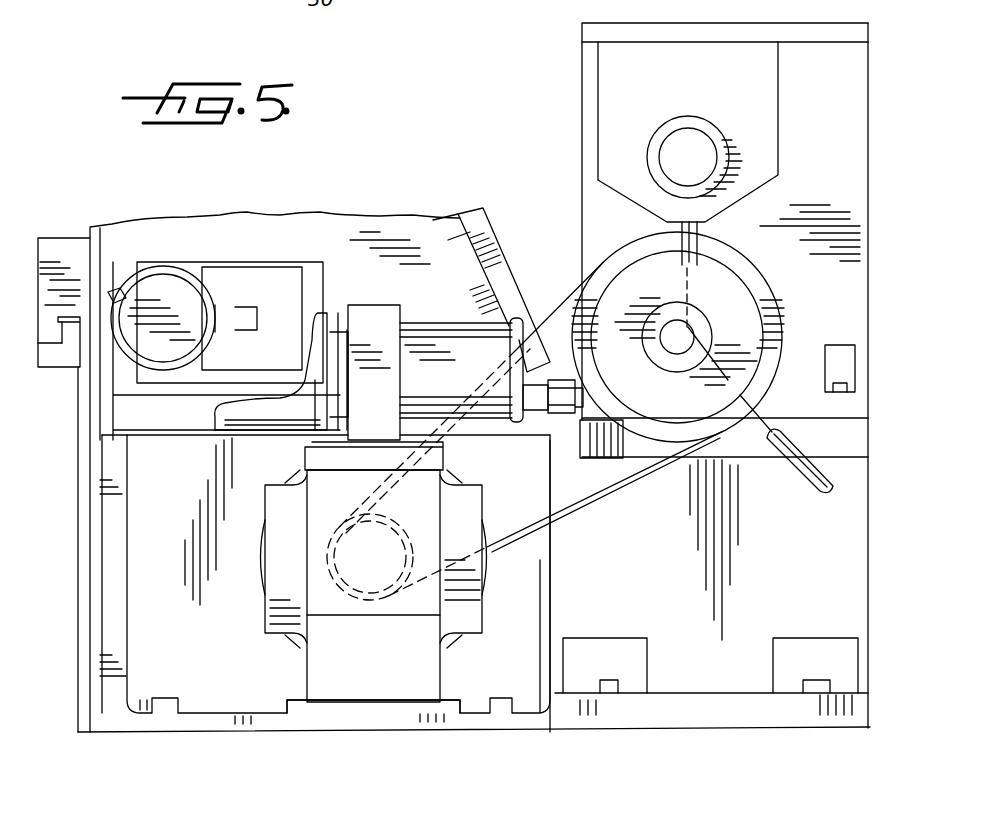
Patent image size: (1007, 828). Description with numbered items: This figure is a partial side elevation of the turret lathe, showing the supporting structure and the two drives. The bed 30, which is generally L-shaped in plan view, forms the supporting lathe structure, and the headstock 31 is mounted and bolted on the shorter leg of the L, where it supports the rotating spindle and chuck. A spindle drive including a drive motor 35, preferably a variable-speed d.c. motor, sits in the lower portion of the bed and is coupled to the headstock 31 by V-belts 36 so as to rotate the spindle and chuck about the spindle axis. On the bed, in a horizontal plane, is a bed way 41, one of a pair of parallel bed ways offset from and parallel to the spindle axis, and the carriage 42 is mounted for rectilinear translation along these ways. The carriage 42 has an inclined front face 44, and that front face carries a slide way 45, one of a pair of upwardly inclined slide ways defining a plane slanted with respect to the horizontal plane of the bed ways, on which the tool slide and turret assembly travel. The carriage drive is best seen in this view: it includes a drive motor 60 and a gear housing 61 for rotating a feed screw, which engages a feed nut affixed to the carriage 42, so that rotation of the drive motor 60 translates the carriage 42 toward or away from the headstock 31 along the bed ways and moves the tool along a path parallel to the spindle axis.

The bed 30 is at (133, 527).
The headstock 31 is at (857, 205).
The drive motor 35 is at (280, 627).
The V-belts 36 is at (628, 488).
The bed way 41 is at (70, 338).
The carriage 42 is at (60, 245).
The inclined front face 44 is at (495, 215).
The slide way 45 is at (500, 253).
The drive motor 60 is at (165, 285).
The gear housing 61 is at (263, 280).